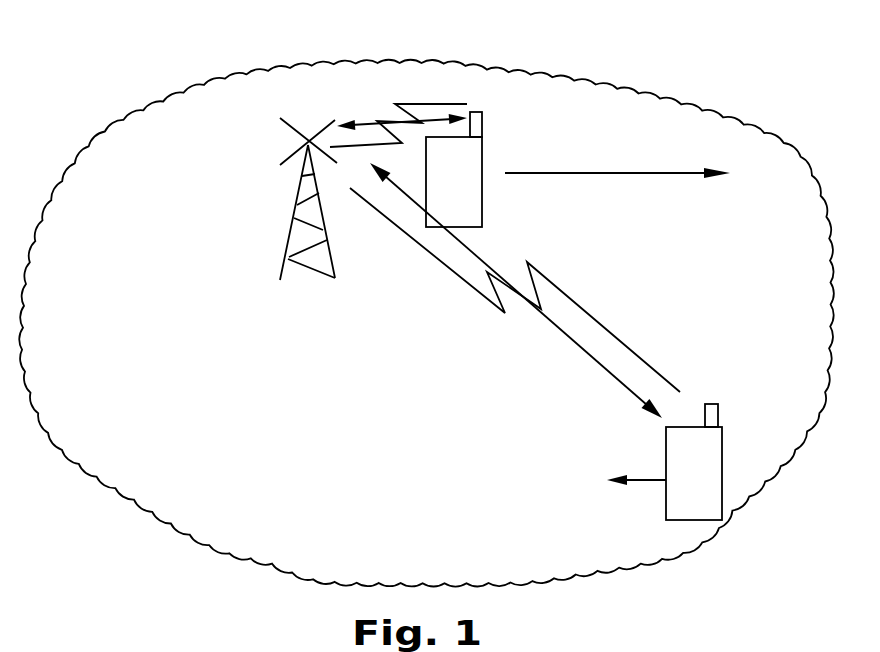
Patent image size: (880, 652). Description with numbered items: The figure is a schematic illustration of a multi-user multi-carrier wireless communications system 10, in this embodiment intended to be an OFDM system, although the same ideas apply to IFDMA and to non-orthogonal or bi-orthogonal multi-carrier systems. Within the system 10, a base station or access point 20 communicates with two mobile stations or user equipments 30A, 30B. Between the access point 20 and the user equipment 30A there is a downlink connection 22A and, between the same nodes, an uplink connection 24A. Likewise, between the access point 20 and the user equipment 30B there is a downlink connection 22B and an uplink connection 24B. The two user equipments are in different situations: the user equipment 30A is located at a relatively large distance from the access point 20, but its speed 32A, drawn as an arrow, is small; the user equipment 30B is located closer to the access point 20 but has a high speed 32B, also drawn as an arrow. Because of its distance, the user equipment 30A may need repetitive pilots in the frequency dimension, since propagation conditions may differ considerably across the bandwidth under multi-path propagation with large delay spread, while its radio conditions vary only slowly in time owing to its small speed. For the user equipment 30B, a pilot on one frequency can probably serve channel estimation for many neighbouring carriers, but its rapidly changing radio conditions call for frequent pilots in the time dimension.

The multi-user multi-carrier wireless communications system 10 is at (92, 468).
The base station or access point 20 is at (335, 255).
The downlink connection 22A is at (499, 313).
The downlink connection 22B is at (430, 113).
The uplink connection 24A is at (640, 357).
The uplink connection 24B is at (407, 118).
The user equipment 30A is at (715, 513).
The user equipment 30B is at (482, 190).
The speed 32A is at (630, 483).
The speed 32B is at (625, 173).